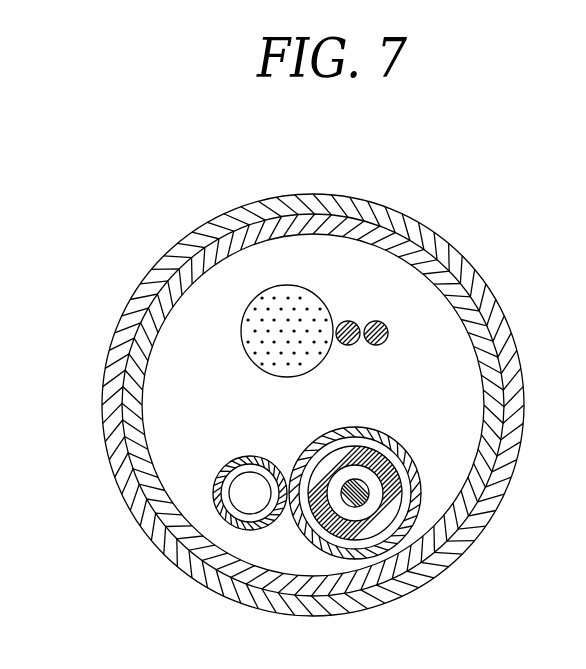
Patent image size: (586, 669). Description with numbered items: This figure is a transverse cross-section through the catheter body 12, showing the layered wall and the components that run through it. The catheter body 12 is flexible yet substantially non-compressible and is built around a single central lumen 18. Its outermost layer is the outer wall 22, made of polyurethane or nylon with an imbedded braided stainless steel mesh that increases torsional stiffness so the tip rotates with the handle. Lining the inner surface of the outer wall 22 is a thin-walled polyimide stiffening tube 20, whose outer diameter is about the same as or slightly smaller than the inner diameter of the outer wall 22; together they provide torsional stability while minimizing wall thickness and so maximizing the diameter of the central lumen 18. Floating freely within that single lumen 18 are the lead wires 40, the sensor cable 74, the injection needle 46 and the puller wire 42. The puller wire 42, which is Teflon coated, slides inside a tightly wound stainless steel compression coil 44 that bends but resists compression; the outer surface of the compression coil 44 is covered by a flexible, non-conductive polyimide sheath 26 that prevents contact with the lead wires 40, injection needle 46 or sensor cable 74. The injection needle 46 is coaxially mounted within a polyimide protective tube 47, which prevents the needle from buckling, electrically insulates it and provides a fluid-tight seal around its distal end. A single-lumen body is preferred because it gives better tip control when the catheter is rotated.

The catheter body 12 is at (528, 337).
The central lumen 18 is at (425, 354).
The stiffening tube 20 is at (236, 246).
The outer wall 22 is at (292, 212).
The non-conductive sheath 26 is at (417, 503).
The lead wires 40 is at (348, 321).
The puller wire 42 is at (355, 500).
The compression coil 44 is at (407, 470).
The injection needle 46 is at (220, 497).
The protective tube 47 is at (216, 494).
The sensor cable 74 is at (265, 322).